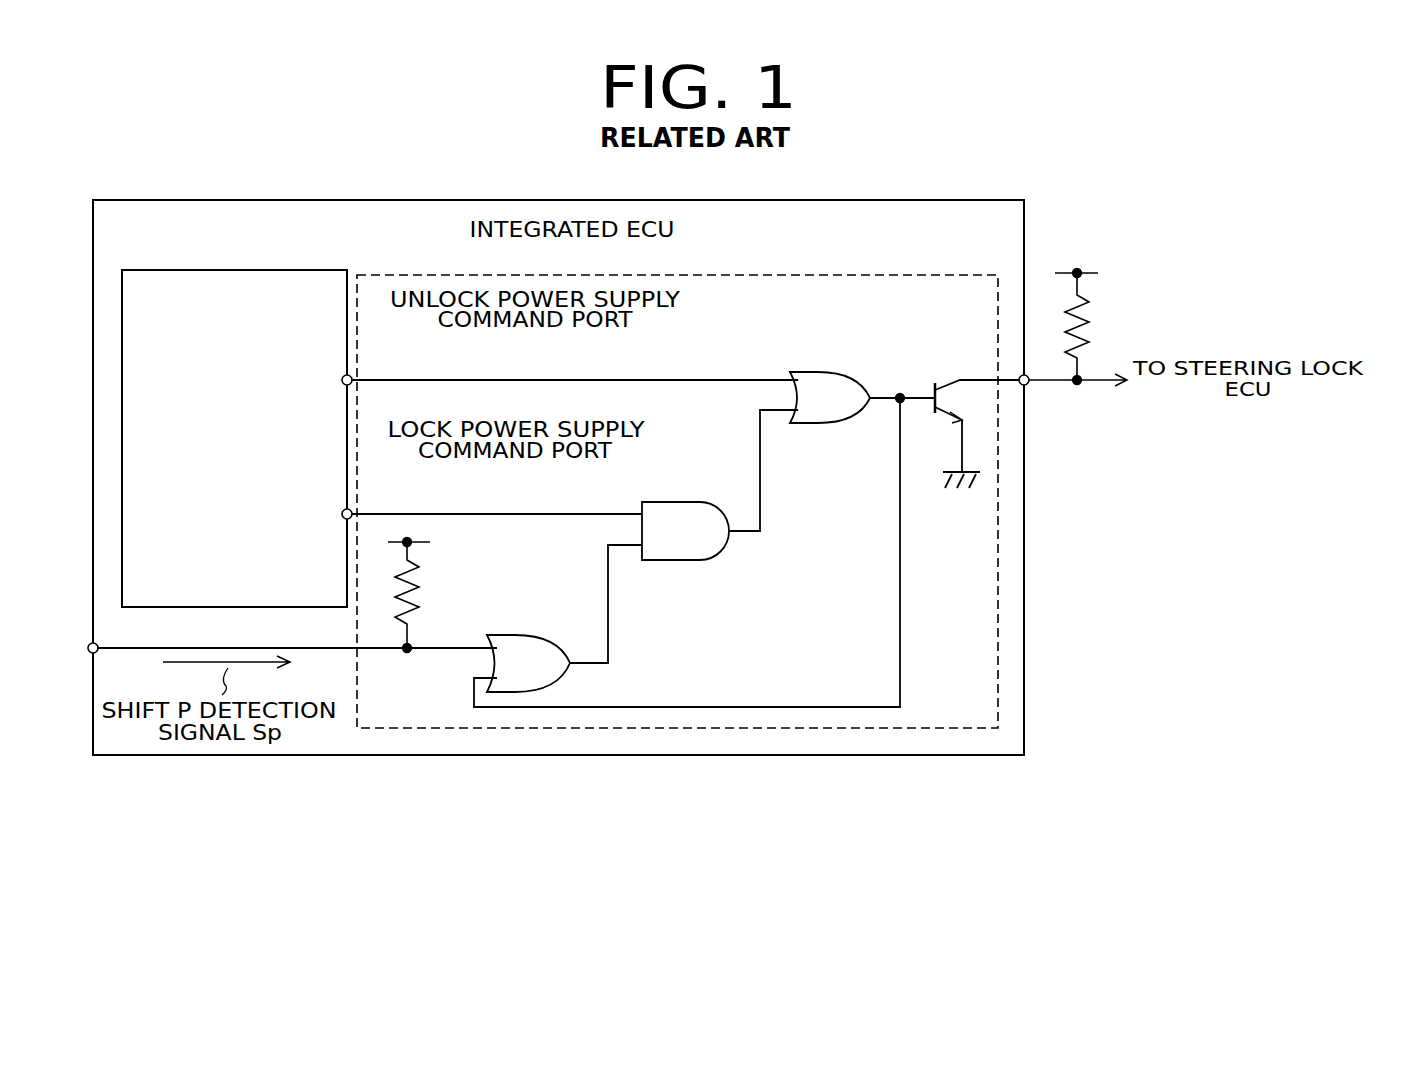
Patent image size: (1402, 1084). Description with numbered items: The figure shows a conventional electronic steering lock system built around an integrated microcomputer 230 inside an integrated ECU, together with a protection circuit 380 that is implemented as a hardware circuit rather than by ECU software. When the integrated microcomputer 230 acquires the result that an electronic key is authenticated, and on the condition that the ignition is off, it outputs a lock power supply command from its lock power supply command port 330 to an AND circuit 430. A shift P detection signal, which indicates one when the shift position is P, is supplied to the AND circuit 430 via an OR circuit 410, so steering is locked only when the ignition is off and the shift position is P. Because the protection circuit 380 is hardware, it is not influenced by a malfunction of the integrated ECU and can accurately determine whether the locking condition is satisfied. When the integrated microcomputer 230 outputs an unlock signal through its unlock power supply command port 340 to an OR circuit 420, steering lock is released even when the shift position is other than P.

The integrated microcomputer 230 is at (237, 270).
The lock power supply command port 330 is at (352, 510).
The unlock power supply command port 340 is at (352, 378).
The protection circuit 380 is at (785, 274).
The OR circuit 410 is at (518, 633).
The OR circuit 420 is at (823, 425).
The AND circuit 430 is at (677, 563).